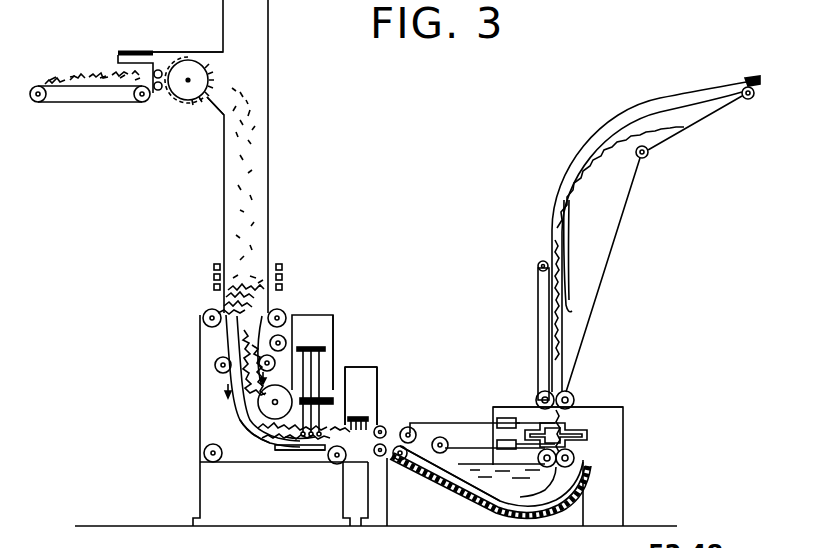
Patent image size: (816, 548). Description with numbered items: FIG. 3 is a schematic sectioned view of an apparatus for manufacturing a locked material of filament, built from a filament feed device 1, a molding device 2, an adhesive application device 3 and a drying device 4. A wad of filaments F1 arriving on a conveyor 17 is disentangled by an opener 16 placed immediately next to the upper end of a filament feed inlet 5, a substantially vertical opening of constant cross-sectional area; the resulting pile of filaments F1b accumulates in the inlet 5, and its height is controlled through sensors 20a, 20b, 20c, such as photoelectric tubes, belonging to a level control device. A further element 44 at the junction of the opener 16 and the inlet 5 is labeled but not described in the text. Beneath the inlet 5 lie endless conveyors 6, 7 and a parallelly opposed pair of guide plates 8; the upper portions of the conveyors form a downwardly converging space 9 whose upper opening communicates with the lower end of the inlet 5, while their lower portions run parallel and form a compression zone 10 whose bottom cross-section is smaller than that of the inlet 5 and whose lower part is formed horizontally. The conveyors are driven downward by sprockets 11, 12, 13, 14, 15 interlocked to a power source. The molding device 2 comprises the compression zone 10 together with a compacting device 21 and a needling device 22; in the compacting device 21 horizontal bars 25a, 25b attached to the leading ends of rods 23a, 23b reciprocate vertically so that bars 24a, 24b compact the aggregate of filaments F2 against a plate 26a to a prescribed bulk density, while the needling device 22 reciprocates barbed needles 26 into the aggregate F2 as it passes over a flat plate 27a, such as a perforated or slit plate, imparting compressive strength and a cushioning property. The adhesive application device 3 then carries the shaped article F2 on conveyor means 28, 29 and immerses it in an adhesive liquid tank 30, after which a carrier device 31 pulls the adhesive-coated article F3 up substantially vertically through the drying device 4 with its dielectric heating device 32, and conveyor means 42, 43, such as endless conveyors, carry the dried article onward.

The filament feed device 1 is at (181, 43).
The molding device 2 is at (370, 362).
The adhesive application device 3 is at (482, 402).
The drying device 4 is at (606, 400).
The filament feed inlet 5 is at (275, 197).
The endless conveyor 6 is at (228, 347).
The endless conveyor 7 is at (290, 328).
The guide plate 8 is at (236, 393).
The downwardly converging space 9 is at (240, 356).
The compression zone 10 is at (238, 430).
The sprocket 11 is at (208, 310).
The sprocket 12 is at (283, 306).
The sprocket 13 is at (207, 461).
The sprocket 14 is at (336, 465).
The sprocket 15 is at (268, 420).
The opener 16 is at (185, 100).
The conveyor 17 is at (90, 88).
The sensor 20a is at (283, 267).
The sensor 20b is at (283, 277).
The sensor 20c is at (283, 287).
The compacting device 21 is at (331, 373).
The needling device 22 is at (358, 418).
The rod 23a is at (350, 372).
The rod 23b is at (360, 400).
The bar 24a is at (290, 440).
The bar 24b is at (310, 450).
The horizontal bar 25a is at (362, 366).
The horizontal bar 25b is at (340, 392).
The needle 26 is at (392, 432).
The plate 26a is at (285, 452).
The flat plate 27a is at (373, 460).
The conveyor means 28 is at (442, 462).
The conveyor means 29 is at (440, 433).
The adhesive liquid tank 30 is at (570, 490).
The carrier device 31 is at (503, 418).
The dielectric heating device 32 is at (625, 408).
The conveyor means 42 is at (537, 305).
The conveyor means 43 is at (562, 328).
The inlet 44 is at (220, 73).
The wad of filaments F1 is at (74, 82).
The fibrous material in chute F1b is at (226, 285).
The aggregate of filaments F2 is at (304, 471).
The shaped article of filaments F3 is at (470, 476).